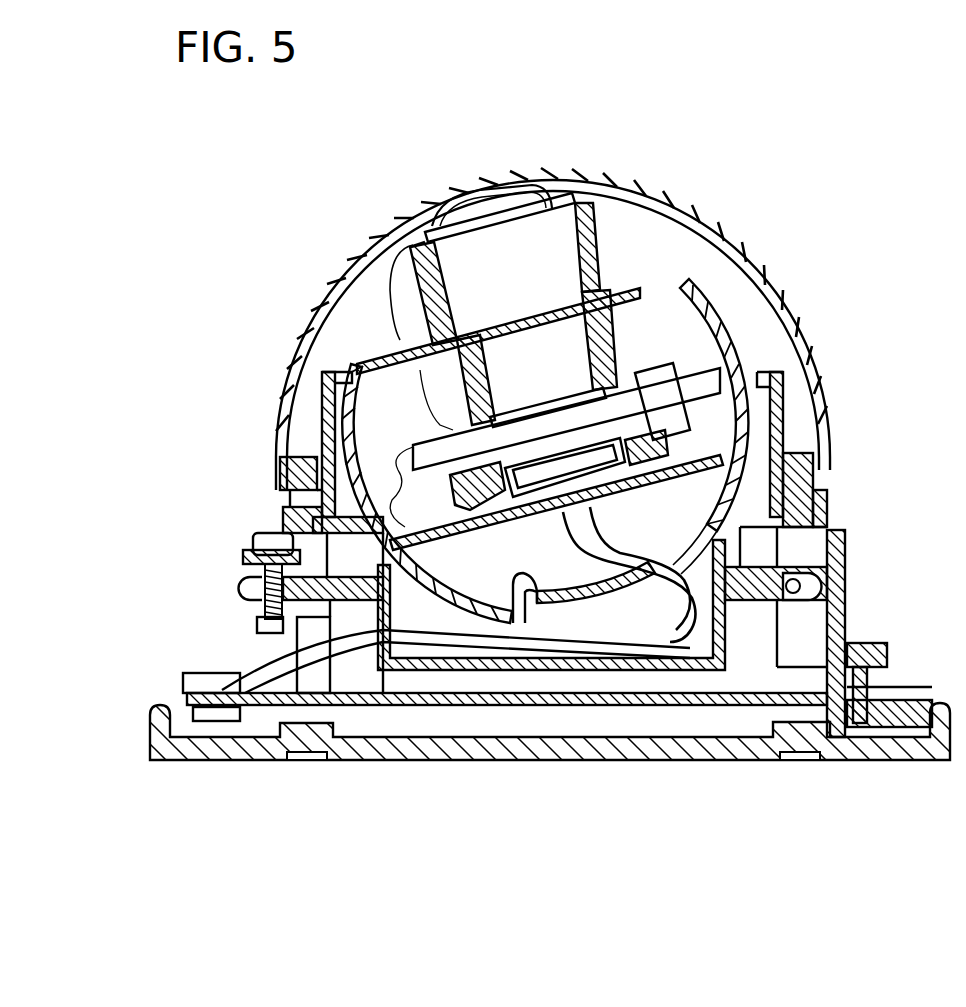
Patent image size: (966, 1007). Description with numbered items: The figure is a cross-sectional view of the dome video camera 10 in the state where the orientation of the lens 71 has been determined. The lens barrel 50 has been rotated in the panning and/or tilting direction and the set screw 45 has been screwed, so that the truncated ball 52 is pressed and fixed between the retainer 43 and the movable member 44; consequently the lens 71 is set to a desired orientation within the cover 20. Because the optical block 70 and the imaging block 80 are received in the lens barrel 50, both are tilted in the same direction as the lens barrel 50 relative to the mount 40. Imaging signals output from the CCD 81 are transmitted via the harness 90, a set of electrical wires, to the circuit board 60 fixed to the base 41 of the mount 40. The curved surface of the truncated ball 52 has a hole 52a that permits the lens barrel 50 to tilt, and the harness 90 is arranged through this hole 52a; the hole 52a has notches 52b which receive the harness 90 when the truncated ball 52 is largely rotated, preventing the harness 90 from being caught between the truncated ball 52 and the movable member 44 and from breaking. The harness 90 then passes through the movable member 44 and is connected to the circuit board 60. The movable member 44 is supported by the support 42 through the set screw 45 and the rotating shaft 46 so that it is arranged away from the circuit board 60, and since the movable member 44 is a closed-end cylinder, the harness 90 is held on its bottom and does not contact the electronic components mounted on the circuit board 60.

The dome video camera 10 is at (541, 106).
The cover 20 is at (650, 183).
The mount 40 is at (258, 750).
The base 41 is at (550, 731).
The support 42 is at (812, 610).
The retainer 43 is at (773, 393).
The movable member 44 is at (250, 587).
The set screw 45 is at (263, 533).
The rotating shaft 46 is at (800, 585).
The lens barrel 50 is at (600, 243).
The truncated ball 52 is at (765, 452).
The hole 52a is at (610, 613).
The notches 52b is at (530, 600).
The circuit board 60 is at (793, 705).
The optical block 70 is at (385, 330).
The lens 71 is at (470, 190).
The imaging block 80 is at (395, 485).
The CCD 81 is at (565, 472).
The harness 90 is at (670, 647).